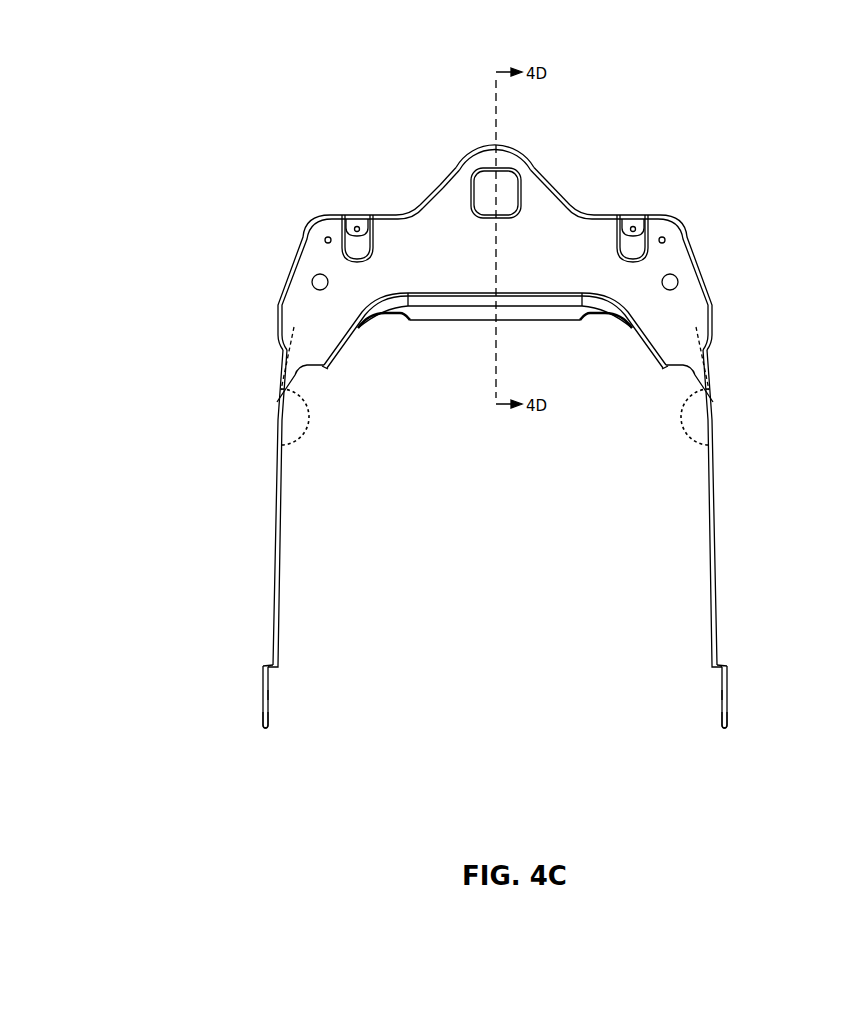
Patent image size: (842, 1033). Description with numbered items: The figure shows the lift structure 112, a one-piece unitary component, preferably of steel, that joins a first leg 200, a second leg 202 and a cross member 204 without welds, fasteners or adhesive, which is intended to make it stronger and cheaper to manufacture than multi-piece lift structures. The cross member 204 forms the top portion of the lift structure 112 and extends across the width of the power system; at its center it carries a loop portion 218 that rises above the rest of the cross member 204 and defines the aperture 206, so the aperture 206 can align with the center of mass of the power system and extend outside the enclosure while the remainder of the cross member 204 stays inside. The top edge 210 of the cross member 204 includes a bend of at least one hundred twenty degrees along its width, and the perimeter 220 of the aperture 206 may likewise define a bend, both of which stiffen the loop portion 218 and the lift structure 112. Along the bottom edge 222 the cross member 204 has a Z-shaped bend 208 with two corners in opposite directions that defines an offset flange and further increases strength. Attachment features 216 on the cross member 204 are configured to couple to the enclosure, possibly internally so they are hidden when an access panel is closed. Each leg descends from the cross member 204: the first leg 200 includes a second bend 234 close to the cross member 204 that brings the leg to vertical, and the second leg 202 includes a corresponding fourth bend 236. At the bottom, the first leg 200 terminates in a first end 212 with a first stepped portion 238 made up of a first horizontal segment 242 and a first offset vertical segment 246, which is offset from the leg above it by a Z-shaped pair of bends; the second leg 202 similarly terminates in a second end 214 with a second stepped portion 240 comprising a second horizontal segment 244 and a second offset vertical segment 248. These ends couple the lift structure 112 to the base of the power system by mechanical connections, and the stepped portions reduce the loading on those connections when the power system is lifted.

The lift structure 112 is at (290, 70).
The first leg 200 is at (273, 518).
The second leg 202 is at (717, 556).
The cross member 204 is at (549, 237).
The aperture 206 is at (507, 200).
The Z-shaped bend 208 is at (433, 313).
The top edge 210 is at (443, 192).
The first end 212 is at (303, 679).
The second end 214 is at (687, 687).
The attachment features 216 is at (357, 214).
The loop portion 218 is at (507, 158).
The perimeter 220 is at (477, 173).
The bottom edge 222 is at (358, 330).
The second bend 234 is at (275, 410).
The fourth bend 236 is at (717, 410).
The first stepped portion 238 is at (225, 662).
The second stepped portion 240 is at (760, 657).
The first horizontal segment 242 is at (268, 665).
The second horizontal segment 244 is at (727, 666).
The first offset vertical segment 246 is at (263, 712).
The second offset vertical segment 248 is at (727, 708).